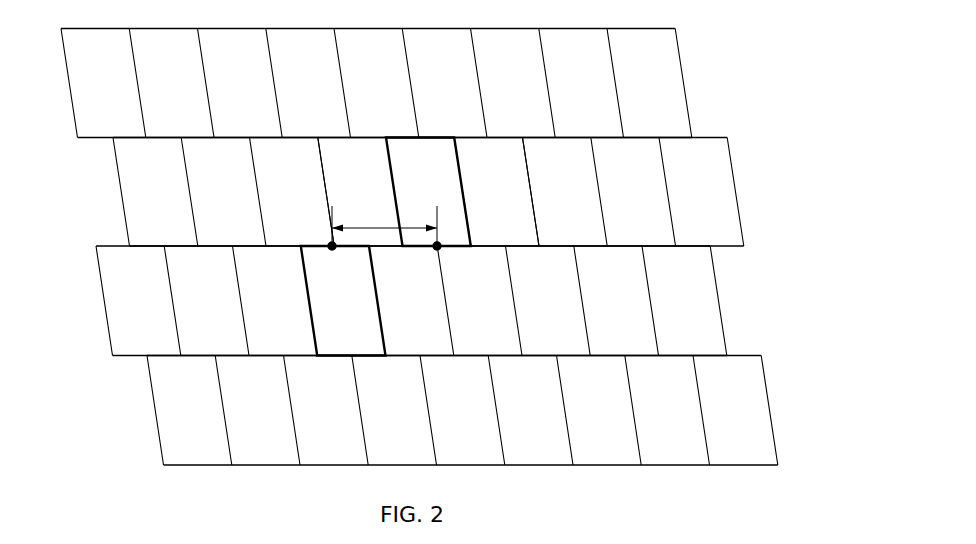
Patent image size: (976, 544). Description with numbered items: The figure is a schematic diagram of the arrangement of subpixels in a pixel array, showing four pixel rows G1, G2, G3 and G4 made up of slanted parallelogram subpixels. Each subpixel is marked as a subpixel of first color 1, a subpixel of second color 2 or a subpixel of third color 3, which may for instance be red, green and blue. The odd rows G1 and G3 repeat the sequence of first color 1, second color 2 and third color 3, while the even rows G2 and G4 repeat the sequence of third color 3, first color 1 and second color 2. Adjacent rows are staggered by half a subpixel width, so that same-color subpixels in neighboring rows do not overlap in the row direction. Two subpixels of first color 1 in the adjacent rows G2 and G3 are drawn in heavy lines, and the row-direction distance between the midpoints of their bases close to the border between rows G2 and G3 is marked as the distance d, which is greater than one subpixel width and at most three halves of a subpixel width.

The pixel row G1 is at (349, 83).
The pixel row G2 is at (375, 192).
The pixel row G3 is at (366, 301).
The pixel row G4 is at (392, 411).
The subpixel of first color 1 is at (428, 192).
The subpixel of second color 2 is at (496, 192).
The subpixel of third color 3 is at (342, 192).
The distance d is at (384, 226).